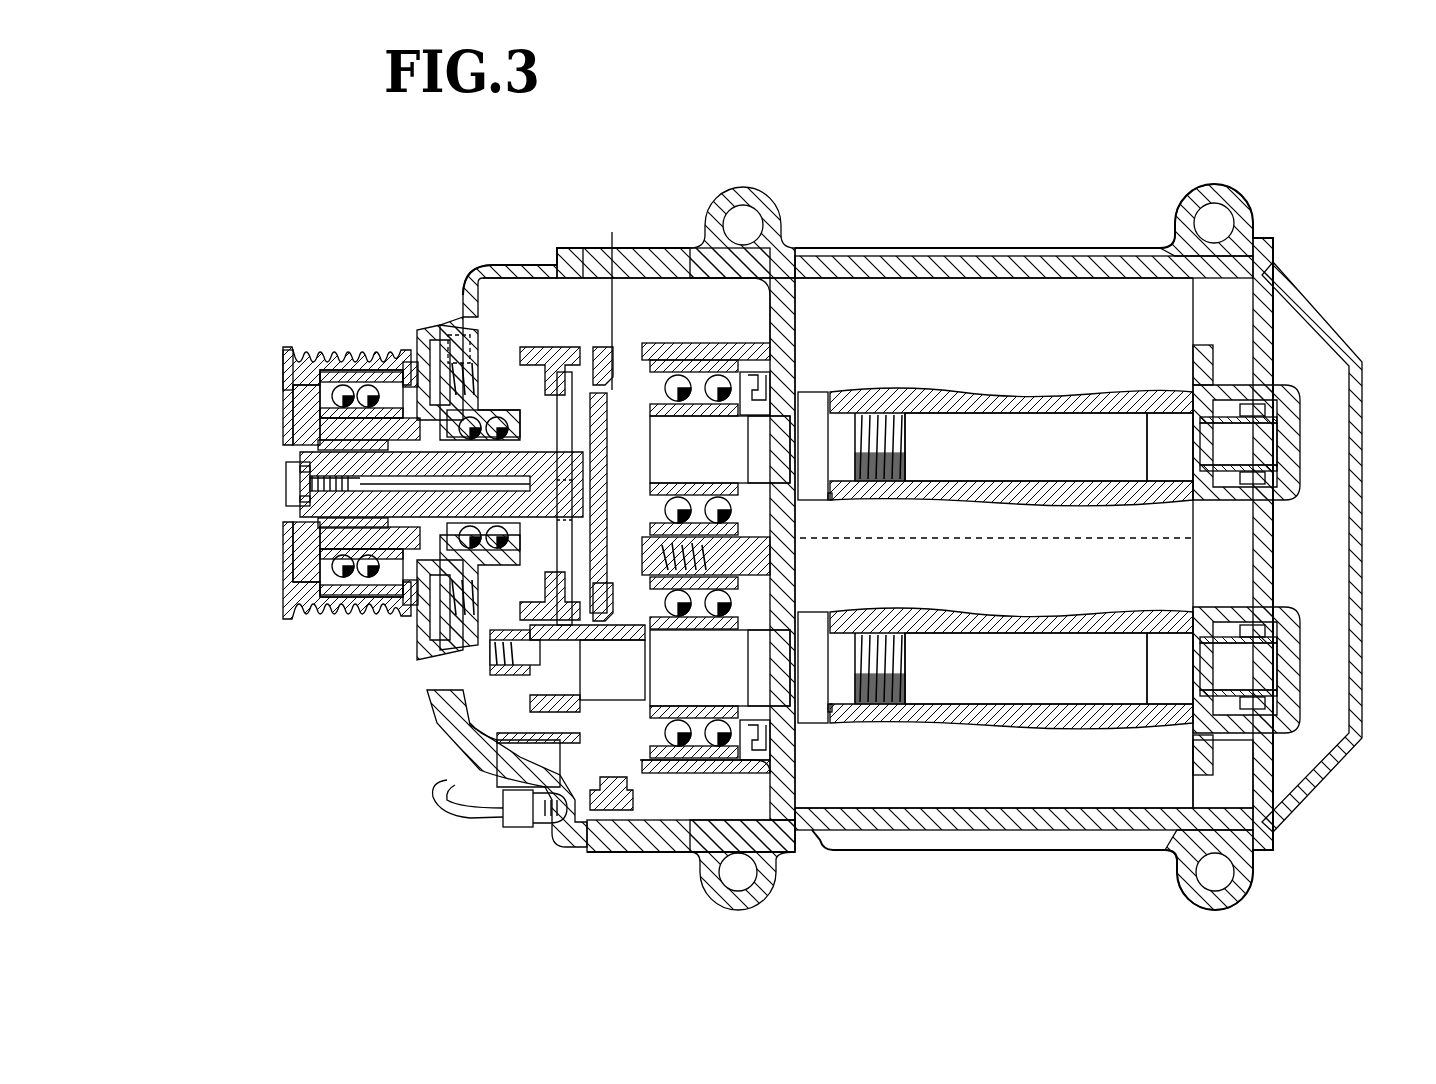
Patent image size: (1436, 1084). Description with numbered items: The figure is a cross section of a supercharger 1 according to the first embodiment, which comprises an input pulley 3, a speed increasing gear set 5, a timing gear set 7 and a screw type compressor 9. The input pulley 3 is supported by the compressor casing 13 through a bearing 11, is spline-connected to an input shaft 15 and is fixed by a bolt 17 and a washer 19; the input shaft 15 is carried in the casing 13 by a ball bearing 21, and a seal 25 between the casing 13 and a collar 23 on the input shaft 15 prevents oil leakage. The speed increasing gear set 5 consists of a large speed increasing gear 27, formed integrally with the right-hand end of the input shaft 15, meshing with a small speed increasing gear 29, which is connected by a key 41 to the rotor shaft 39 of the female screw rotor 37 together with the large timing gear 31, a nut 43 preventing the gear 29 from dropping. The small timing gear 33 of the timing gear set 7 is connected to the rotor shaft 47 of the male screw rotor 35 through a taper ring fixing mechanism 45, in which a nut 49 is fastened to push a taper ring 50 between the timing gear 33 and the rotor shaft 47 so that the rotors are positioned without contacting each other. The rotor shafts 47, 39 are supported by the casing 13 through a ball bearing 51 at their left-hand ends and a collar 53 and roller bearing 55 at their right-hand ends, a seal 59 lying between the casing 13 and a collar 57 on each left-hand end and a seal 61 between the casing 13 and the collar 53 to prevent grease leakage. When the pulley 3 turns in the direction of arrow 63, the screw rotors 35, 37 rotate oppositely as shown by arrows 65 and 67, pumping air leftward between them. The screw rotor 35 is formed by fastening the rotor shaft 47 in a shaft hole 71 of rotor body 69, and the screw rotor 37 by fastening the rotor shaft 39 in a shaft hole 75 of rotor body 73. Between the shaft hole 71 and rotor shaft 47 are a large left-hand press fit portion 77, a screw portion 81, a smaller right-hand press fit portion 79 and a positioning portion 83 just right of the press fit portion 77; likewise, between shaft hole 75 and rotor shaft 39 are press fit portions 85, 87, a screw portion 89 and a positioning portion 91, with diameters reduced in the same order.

The supercharger 1 is at (1172, 152).
The input pulley 3 is at (302, 345).
The speed increasing gear set 5 is at (505, 303).
The timing gear set 7 is at (625, 300).
The screw type compressor 9 is at (985, 215).
The bearing 11 is at (288, 385).
The compressor casing 13 is at (795, 232).
The input shaft 15 is at (290, 484).
The bolt 17 is at (292, 500).
The washer 19 is at (310, 535).
The ball bearing 21 is at (460, 415).
The collar 23 is at (300, 470).
The seal 25 is at (395, 598).
The speed increasing gear 27 is at (540, 347).
The speed increasing gear 29 is at (478, 745).
The timing gear 31 is at (622, 810).
The timing gear 33 is at (620, 345).
The screw rotor 35 is at (1205, 313).
The screw rotor 37 is at (1228, 755).
The rotor shaft 39 is at (600, 700).
The key 41 is at (540, 660).
The nut 43 is at (570, 690).
The taper ring fixing mechanism 45 is at (598, 390).
The rotor shaft 47 is at (610, 408).
The nut 49 is at (582, 498).
The taper ring 50 is at (632, 430).
The ball bearing 51 is at (735, 532).
The collar 53 is at (1225, 470).
The roller bearing 55 is at (1257, 617).
The collar 57 is at (778, 492).
The seal 59 is at (752, 385).
The seal 61 is at (1222, 403).
The arrow 63 is at (196, 432).
The arrow 65 is at (1333, 407).
The arrow 67 is at (1330, 700).
The rotor body 69 is at (986, 324).
The shaft hole 71 is at (1005, 414).
The rotor body 73 is at (986, 762).
The shaft hole 75 is at (1030, 695).
The press fit portion 77 is at (812, 392).
The press fit portion 79 is at (1170, 400).
The screw portion 81 is at (890, 400).
The positioning portion 83 is at (833, 498).
The press fit portion 85 is at (812, 615).
The press fit portion 87 is at (1160, 620).
The screw portion 89 is at (890, 622).
The positioning portion 91 is at (833, 716).